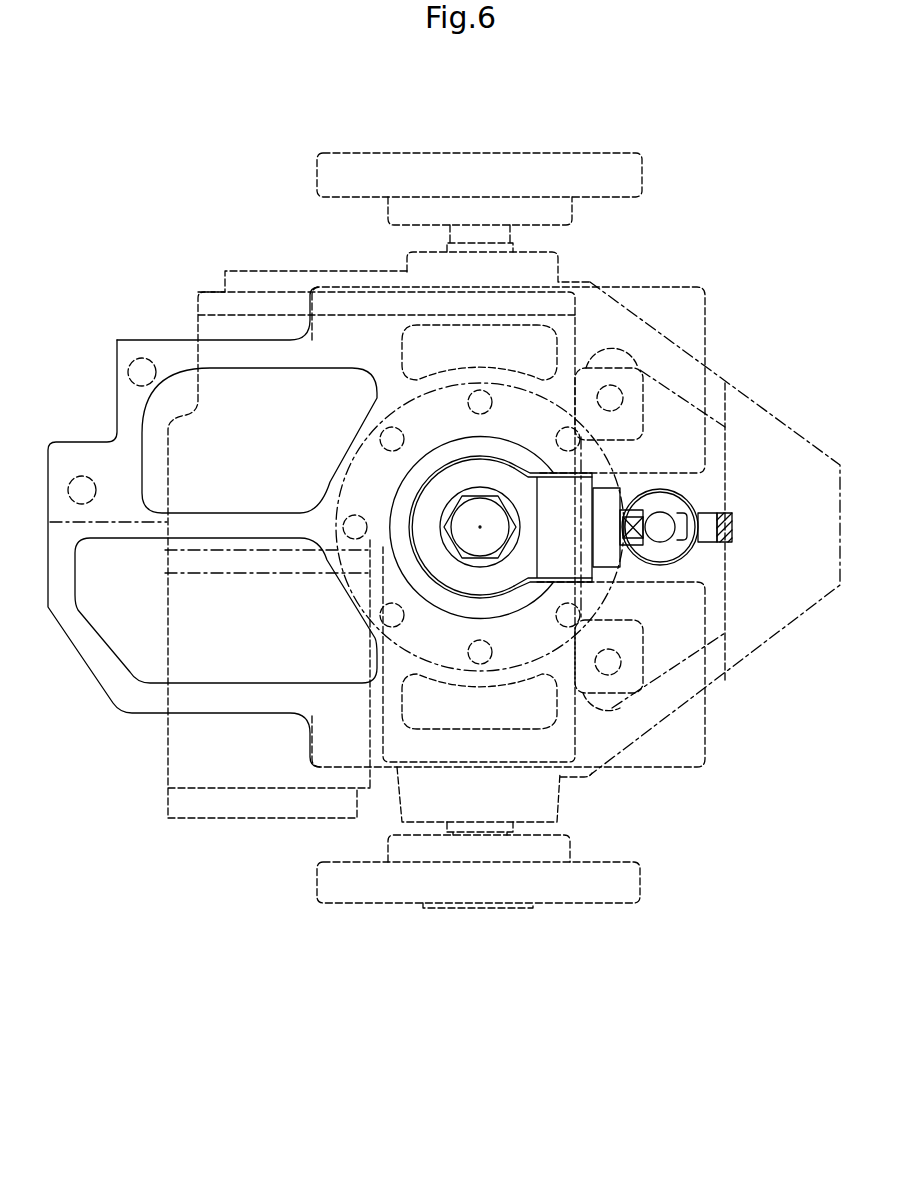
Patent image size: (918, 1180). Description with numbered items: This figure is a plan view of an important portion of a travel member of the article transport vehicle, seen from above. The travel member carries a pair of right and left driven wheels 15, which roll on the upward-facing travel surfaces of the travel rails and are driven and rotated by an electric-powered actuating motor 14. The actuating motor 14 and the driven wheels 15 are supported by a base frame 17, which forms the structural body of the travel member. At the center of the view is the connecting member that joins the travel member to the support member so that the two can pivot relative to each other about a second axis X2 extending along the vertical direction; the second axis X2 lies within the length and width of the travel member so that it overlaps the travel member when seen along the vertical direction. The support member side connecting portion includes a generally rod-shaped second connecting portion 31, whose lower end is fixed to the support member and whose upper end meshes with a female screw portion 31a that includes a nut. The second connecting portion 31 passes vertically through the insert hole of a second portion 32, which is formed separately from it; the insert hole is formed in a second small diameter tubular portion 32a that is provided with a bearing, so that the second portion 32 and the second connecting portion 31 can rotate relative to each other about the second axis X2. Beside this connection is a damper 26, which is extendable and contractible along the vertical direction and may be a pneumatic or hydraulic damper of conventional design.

The driven wheels 15 is at (495, 170).
The actuating motor 14 is at (178, 770).
The base frame 17 is at (122, 693).
The second portion 32 is at (536, 509).
The second small diameter tubular portion 32a is at (487, 477).
The second connecting portion 31 is at (568, 553).
The female screw portion 31a is at (492, 543).
The damper 26 is at (663, 502).
The second axis X2 is at (480, 527).